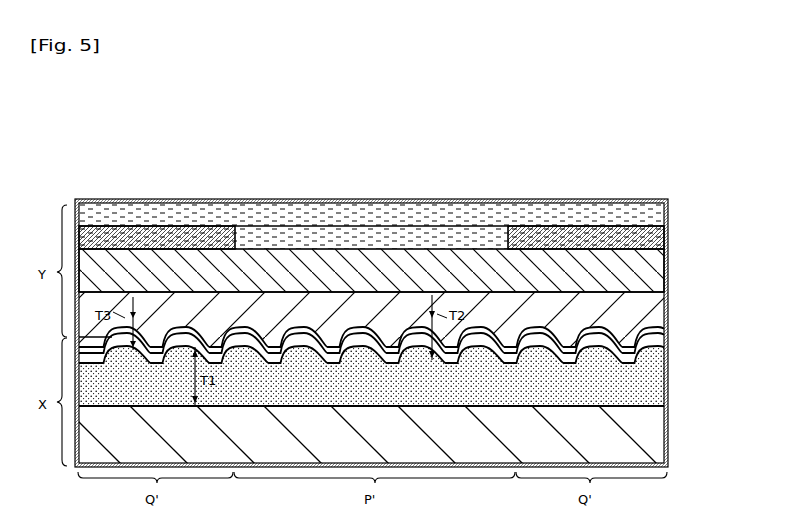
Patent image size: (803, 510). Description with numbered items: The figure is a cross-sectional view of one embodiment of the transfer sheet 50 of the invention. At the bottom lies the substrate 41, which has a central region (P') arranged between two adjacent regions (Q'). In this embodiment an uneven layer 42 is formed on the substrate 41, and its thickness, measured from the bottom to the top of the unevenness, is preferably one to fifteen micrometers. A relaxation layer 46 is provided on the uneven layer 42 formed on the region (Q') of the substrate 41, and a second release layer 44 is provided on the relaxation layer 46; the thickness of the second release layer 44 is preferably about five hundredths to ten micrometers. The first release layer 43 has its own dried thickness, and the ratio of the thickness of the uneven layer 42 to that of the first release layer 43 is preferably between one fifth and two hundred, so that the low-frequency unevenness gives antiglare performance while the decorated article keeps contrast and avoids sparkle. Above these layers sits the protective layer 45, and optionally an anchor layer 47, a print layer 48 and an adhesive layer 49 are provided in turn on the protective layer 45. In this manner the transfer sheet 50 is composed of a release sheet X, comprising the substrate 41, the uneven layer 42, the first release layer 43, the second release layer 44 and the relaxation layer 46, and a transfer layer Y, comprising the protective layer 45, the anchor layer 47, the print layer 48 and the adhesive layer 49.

The substrate 41 is at (660, 438).
The uneven layer 42 is at (668, 390).
The first release layer 43 is at (367, 328).
The second release layer 44 is at (668, 341).
The protective layer 45 is at (660, 313).
The relaxation layer 46 is at (667, 353).
The anchor layer 47 is at (668, 269).
The print layer 48 is at (668, 236).
The adhesive layer 49 is at (668, 214).
The transfer sheet 50 is at (396, 143).